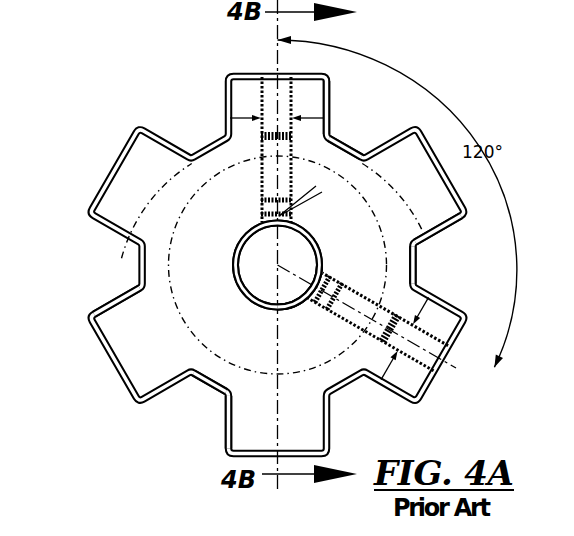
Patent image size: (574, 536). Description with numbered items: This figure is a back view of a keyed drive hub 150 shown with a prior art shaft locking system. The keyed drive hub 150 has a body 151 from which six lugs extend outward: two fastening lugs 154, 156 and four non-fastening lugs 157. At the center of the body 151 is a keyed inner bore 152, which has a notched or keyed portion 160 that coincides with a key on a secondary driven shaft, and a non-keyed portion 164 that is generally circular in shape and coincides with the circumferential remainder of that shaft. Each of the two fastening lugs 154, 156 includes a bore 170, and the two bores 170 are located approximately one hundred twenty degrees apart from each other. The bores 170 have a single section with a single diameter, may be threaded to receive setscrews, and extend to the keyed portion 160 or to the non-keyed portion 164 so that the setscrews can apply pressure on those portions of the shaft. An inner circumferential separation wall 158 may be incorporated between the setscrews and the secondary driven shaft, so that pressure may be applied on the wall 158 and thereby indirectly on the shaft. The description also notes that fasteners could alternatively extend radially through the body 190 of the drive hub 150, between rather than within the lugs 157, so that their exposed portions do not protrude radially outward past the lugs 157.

The keyed drive hub 150 is at (112, 170).
The body 151 is at (349, 148).
The keyed inner bore 152 is at (245, 236).
The fastening lug 154 is at (329, 110).
The fastening lug 156 is at (416, 290).
The non-fastening lugs 157 is at (436, 229).
The inner circumferential separation wall 158 is at (323, 268).
The keyed portion 160 is at (291, 214).
The non-keyed portion 164 is at (304, 296).
The bores 170 is at (258, 100).
The body 190 is at (188, 381).